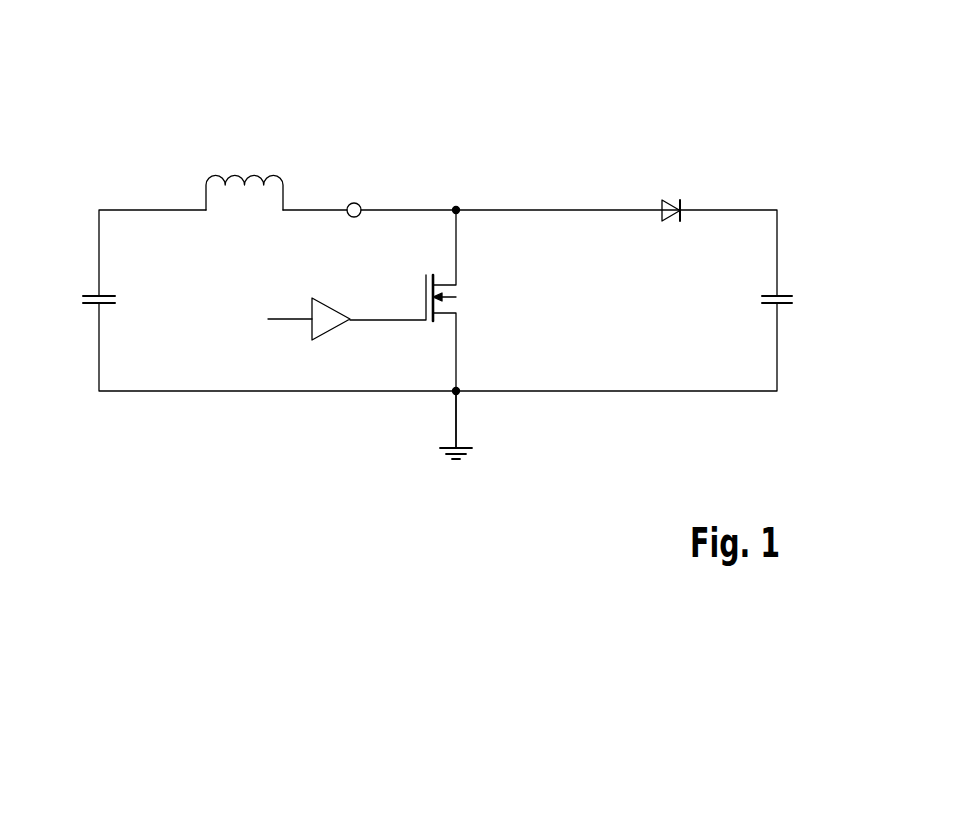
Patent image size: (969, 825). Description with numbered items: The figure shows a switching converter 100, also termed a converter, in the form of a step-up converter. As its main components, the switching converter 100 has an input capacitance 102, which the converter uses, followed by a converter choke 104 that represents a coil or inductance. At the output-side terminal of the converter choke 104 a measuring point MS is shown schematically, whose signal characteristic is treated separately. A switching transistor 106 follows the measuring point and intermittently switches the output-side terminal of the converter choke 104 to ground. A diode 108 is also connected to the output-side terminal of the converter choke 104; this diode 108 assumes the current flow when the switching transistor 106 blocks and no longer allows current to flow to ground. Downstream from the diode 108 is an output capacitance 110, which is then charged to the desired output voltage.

The switching converter 100 is at (753, 88).
The input capacitance 102 is at (95, 295).
The converter choke 104 is at (245, 176).
The switching transistor 106 is at (396, 292).
The diode 108 is at (680, 201).
The output capacitance 110 is at (783, 295).